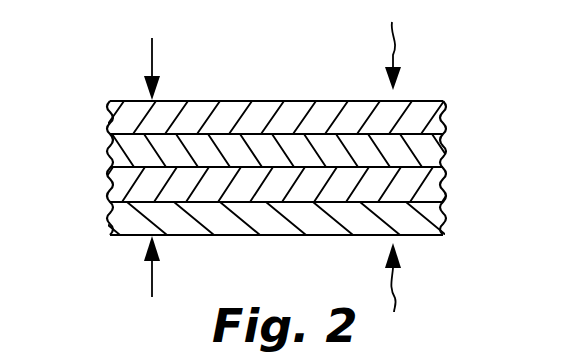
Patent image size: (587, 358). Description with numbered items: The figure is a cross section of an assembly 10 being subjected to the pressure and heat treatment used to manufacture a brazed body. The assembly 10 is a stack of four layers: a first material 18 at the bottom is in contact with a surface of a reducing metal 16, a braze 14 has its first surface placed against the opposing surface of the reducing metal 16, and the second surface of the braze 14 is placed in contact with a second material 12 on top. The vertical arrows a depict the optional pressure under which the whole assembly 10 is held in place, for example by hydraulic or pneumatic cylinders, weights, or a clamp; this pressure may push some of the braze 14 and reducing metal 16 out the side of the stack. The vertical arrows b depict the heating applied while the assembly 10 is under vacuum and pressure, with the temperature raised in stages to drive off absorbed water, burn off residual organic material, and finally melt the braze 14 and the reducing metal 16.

The assembly 10 is at (98, 90).
The second material 12 is at (446, 109).
The braze 14 is at (431, 157).
The reducing metal 16 is at (440, 182).
The first material 18 is at (442, 220).
The vertical arrows a is at (152, 53).
The vertical arrows b is at (396, 40).